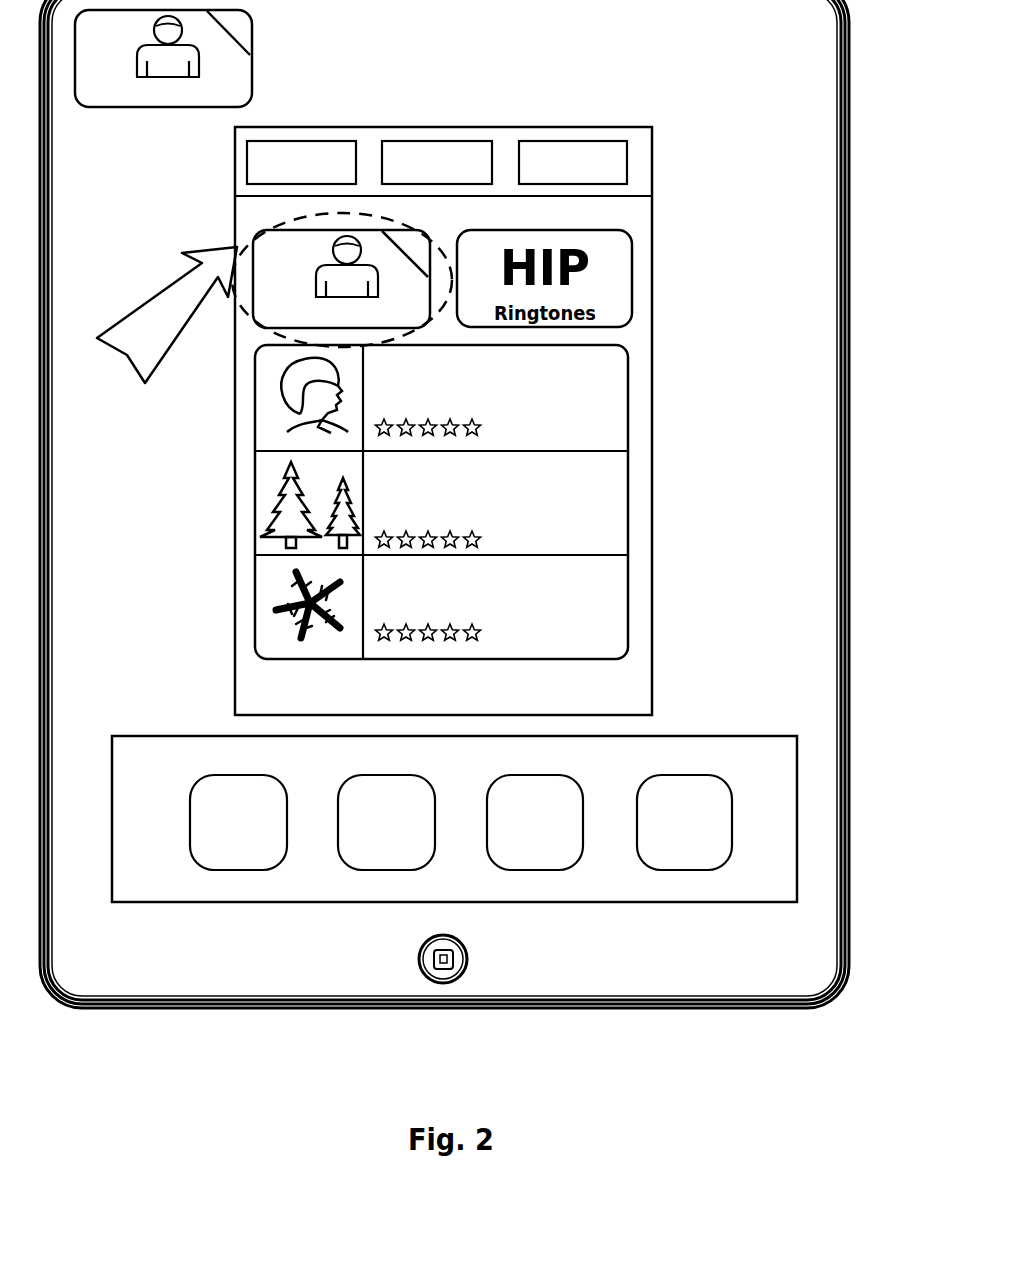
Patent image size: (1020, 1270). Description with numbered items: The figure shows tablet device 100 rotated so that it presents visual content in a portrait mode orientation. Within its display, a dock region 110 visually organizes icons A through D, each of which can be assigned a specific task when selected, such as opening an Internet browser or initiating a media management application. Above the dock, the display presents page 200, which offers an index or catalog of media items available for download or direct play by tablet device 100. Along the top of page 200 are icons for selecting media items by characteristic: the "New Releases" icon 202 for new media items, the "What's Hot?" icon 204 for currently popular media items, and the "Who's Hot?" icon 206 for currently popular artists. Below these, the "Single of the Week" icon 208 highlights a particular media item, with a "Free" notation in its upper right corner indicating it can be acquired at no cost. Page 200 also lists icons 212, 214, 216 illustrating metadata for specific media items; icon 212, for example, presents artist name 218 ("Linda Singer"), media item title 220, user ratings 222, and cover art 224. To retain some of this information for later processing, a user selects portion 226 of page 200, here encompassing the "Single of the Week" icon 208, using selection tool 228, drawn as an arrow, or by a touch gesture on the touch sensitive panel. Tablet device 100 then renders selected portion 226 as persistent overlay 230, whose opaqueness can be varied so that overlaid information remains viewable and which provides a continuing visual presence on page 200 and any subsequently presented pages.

The tablet device 100 is at (606, 1064).
The dock region 110 is at (454, 819).
The page 200 is at (513, 367).
The "New Releases" icon 202 is at (304, 138).
The "What's Hot?" icon 204 is at (433, 141).
The "Who's Hot?" icon 206 is at (575, 140).
The "Single of the Week" icon 208 is at (341, 279).
The icon 212 is at (455, 375).
The icon 214 is at (632, 497).
The icon 216 is at (632, 620).
The artist name 218 is at (486, 370).
The media item title 220 is at (484, 402).
The user ratings 222 is at (488, 433).
The cover art 224 is at (278, 398).
The portion 226 is at (268, 218).
The selection tool 228 is at (167, 315).
The persistent overlay 230 is at (257, 30).